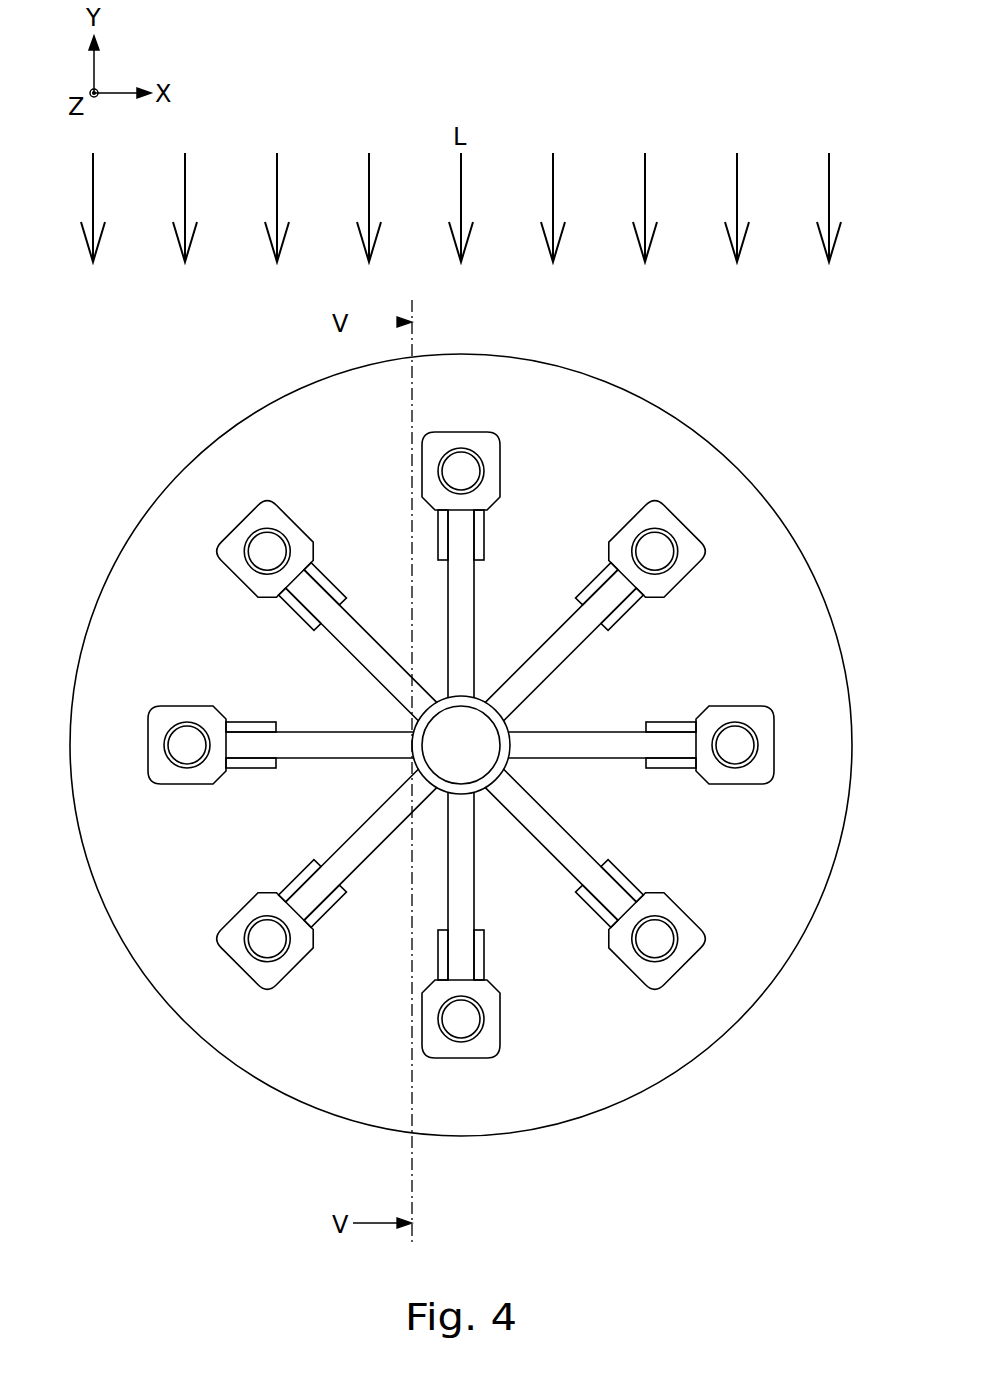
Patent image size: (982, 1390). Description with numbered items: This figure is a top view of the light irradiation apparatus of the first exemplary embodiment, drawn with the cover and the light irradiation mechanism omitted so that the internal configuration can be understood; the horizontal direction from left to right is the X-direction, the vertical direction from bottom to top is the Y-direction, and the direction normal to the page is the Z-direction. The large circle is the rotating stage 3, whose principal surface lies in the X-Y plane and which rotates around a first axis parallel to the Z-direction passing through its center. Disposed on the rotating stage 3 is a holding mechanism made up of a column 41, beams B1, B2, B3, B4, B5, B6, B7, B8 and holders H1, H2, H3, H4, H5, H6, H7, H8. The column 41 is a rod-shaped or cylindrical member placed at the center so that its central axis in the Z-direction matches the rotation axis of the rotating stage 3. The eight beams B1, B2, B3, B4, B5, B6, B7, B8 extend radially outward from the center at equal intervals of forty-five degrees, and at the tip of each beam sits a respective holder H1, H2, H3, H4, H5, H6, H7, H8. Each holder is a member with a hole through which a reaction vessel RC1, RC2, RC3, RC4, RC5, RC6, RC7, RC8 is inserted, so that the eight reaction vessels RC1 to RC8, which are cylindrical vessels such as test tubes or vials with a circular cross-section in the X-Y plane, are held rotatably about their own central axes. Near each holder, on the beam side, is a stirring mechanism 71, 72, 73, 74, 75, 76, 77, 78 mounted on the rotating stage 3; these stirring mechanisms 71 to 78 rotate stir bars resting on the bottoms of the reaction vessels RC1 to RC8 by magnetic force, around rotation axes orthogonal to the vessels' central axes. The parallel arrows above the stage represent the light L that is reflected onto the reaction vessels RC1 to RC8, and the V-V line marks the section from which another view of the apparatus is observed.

The rotating stage 3 is at (612, 393).
The column 41 is at (480, 700).
The holder H1 is at (500, 470).
The holder H2 is at (700, 553).
The holder H3 is at (737, 784).
The holder H4 is at (702, 938).
The holder H5 is at (500, 1017).
The holder H6 is at (229, 938).
The holder H7 is at (188, 784).
The holder H8 is at (220, 552).
The reaction vessel RC1 is at (478, 456).
The reaction vessel RC2 is at (670, 537).
The reaction vessel RC3 is at (772, 745).
The reaction vessel RC4 is at (670, 954).
The reaction vessel RC5 is at (472, 1038).
The reaction vessel RC6 is at (252, 954).
The reaction vessel RC7 is at (156, 745).
The reaction vessel RC8 is at (252, 537).
The stirring mechanism 71 is at (484, 535).
The stirring mechanism 72 is at (633, 610).
The stirring mechanism 73 is at (675, 768).
The stirring mechanism 74 is at (596, 908).
The stirring mechanism 75 is at (484, 950).
The stirring mechanism 76 is at (298, 879).
The stirring mechanism 77 is at (258, 722).
The stirring mechanism 78 is at (326, 600).
The beam B1 is at (475, 590).
The beam B2 is at (590, 650).
The beam B3 is at (540, 732).
The beam B4 is at (584, 838).
The beam B5 is at (475, 893).
The beam B6 is at (357, 866).
The beam B7 is at (350, 732).
The beam B8 is at (358, 637).